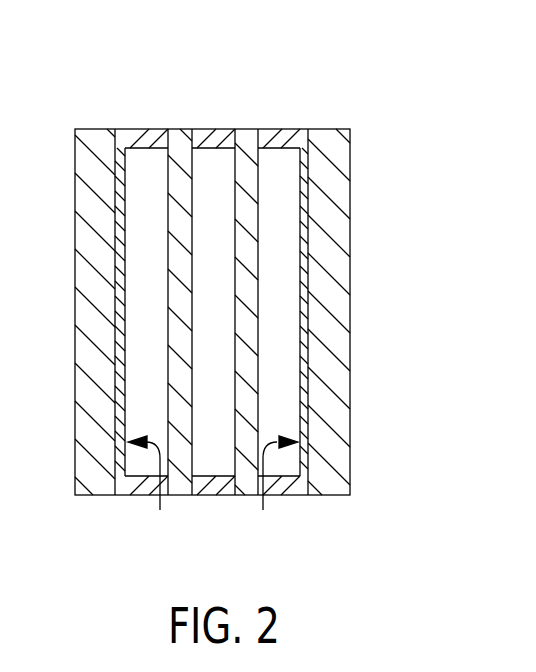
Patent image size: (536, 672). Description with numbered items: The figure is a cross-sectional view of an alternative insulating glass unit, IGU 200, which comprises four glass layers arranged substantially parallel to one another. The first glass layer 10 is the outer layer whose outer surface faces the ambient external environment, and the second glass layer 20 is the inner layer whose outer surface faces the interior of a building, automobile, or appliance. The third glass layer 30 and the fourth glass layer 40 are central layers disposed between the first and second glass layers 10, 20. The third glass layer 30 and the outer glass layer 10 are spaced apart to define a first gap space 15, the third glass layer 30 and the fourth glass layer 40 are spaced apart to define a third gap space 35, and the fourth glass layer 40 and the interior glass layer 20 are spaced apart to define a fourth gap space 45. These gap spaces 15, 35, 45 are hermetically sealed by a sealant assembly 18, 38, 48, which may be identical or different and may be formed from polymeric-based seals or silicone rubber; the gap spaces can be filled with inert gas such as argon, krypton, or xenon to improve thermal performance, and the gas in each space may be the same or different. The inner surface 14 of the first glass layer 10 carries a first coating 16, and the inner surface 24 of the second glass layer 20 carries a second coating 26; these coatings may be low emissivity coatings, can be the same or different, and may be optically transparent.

The IGU 200 is at (428, 145).
The first glass layer 10 is at (333, 142).
The second glass layer 20 is at (90, 132).
The fourth glass layer 40 is at (177, 132).
The third gap space 35 is at (222, 143).
The third glass layer 30 is at (247, 140).
The sealant assembly 38 is at (207, 477).
The second coating 26 is at (120, 293).
The first coating 16 is at (308, 285).
The fourth gap space 45 is at (140, 213).
The first gap space 15 is at (283, 348).
The sealant assembly 48 is at (132, 477).
The sealant assembly 18 is at (292, 482).
The inner surface 24 is at (148, 489).
The inner surface 14 is at (277, 489).